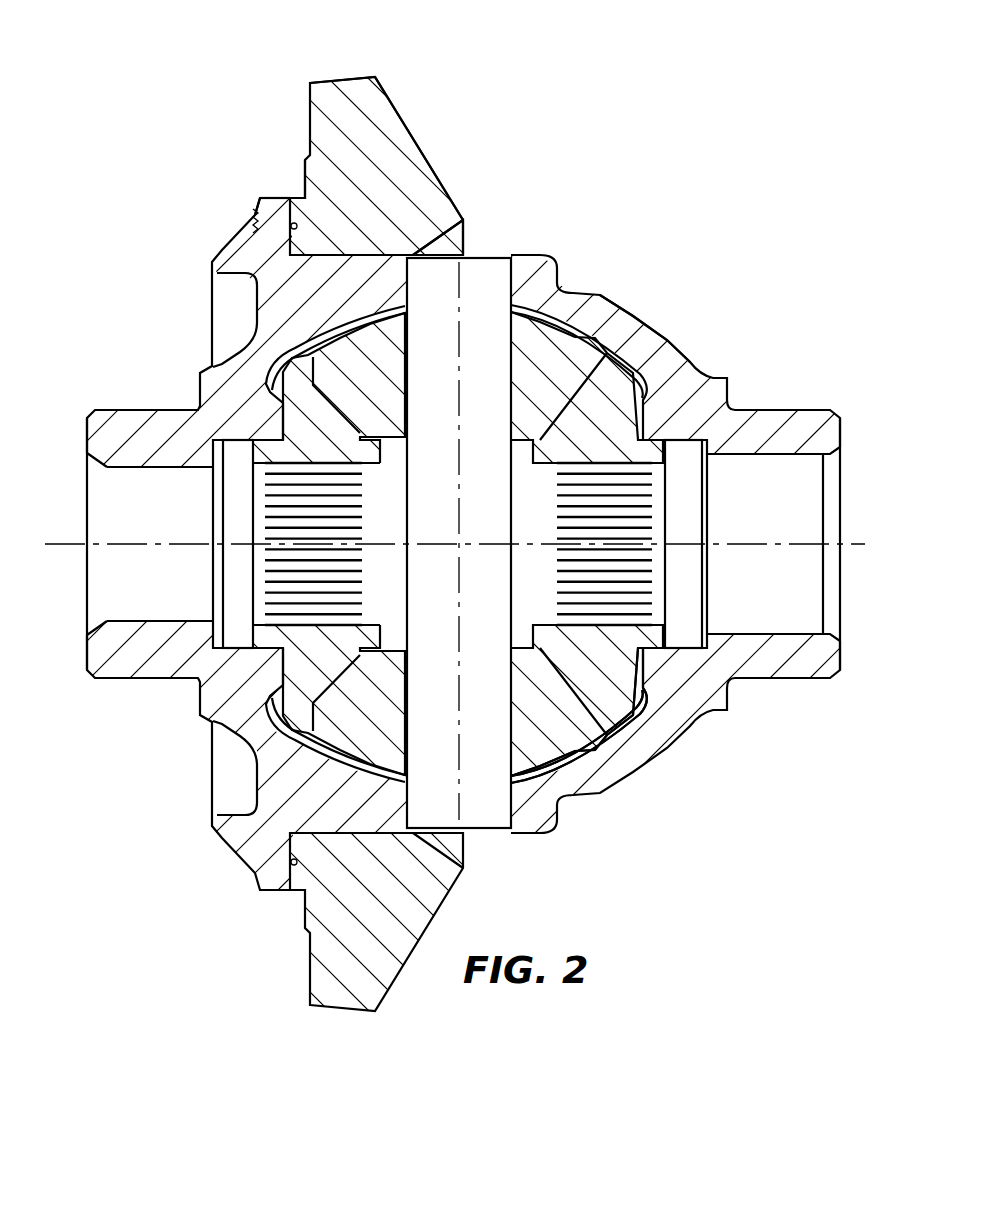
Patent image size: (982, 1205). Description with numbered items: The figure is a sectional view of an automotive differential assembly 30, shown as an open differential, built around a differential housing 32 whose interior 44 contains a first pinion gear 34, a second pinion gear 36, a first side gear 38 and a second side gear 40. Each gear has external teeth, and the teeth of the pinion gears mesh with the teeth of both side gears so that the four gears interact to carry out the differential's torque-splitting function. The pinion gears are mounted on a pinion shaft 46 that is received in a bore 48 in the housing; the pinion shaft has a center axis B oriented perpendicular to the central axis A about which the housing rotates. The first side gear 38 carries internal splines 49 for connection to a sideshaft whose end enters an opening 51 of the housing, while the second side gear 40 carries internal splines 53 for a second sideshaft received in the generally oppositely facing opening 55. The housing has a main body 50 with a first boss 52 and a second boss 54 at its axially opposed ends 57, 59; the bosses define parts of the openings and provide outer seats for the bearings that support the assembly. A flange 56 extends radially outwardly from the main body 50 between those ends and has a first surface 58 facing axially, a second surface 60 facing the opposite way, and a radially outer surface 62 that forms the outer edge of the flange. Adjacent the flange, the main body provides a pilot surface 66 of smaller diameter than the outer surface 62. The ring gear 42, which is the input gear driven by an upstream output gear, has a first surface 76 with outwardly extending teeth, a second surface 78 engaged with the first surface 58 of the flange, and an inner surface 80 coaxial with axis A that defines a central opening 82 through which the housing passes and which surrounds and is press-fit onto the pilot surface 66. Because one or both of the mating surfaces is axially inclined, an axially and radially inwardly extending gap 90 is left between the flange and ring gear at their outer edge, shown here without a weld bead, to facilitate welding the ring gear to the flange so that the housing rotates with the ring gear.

The differential assembly 30 is at (752, 200).
The differential housing 32 is at (712, 357).
The first pinion gear 34 is at (570, 350).
The second pinion gear 36 is at (567, 733).
The first side gear 38 is at (290, 412).
The second side gear 40 is at (617, 677).
The ring gear 42 is at (420, 195).
The interior 44 is at (683, 637).
The pinion shaft 46 is at (488, 813).
The bore 48 is at (498, 797).
The internal splines 49 is at (278, 566).
The main body 50 is at (658, 340).
The opening 51 is at (85, 618).
The first boss 52 is at (110, 424).
The internal splines 53 is at (632, 576).
The second boss 54 is at (820, 412).
The opening 55 is at (835, 600).
The flange 56 is at (258, 208).
The end 57 is at (85, 433).
The first surface 58 is at (297, 194).
The end 59 is at (842, 425).
The second surface 60 is at (258, 212).
The radially outer surface 62 is at (272, 192).
The pilot surface 66 is at (350, 848).
The first surface 76 is at (410, 128).
The second surface 78 is at (300, 93).
The inner surface 80 is at (342, 265).
The central opening 82 is at (467, 230).
The gap 90 is at (282, 897).
The central axis A is at (852, 543).
The center axis B is at (460, 292).